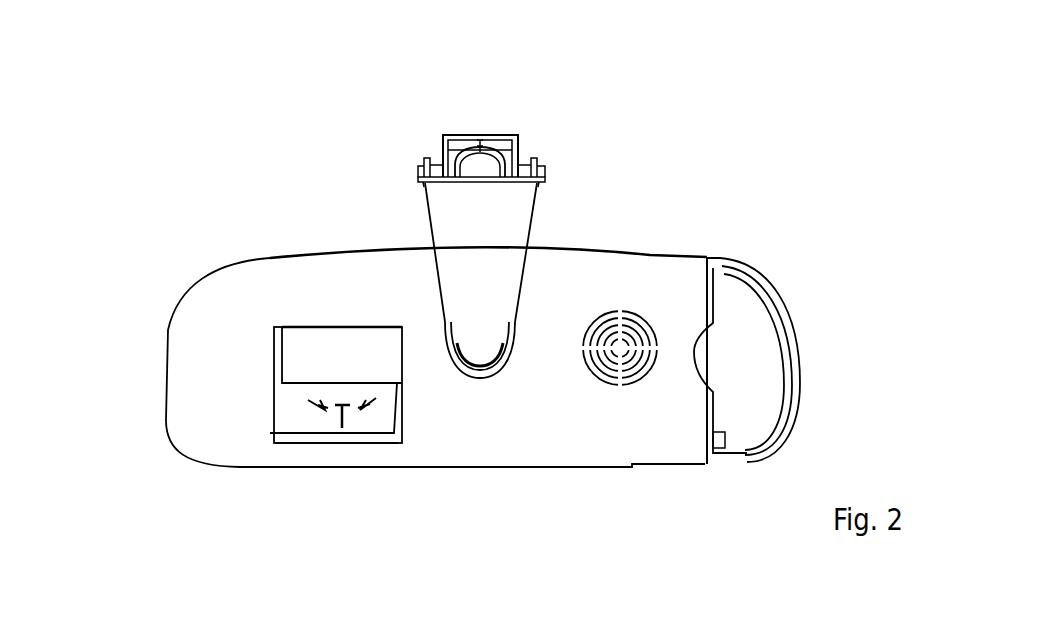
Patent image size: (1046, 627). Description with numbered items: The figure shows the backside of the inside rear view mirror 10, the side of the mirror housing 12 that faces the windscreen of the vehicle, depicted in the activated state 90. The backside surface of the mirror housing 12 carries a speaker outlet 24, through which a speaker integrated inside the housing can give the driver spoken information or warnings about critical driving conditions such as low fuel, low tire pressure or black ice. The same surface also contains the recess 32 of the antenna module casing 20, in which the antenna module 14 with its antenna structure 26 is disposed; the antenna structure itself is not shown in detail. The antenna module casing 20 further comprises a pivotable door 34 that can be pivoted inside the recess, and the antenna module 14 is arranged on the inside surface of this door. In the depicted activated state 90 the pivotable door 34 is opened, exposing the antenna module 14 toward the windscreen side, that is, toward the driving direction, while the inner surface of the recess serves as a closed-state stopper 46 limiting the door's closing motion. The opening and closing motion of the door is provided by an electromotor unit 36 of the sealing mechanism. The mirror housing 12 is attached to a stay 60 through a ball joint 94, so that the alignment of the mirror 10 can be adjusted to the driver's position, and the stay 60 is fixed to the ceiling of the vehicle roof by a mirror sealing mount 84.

The rear view mirror 10 is at (501, 295).
The activated state 90 is at (866, 68).
The mirror housing 12 is at (610, 250).
The antenna module 14 is at (229, 310).
The antenna structure 26 is at (300, 413).
The antenna module casing 20 is at (243, 374).
The recess 32 is at (313, 352).
The electromotor unit 36 is at (342, 395).
The closed-state stopper 46 is at (384, 342).
The pivotable door 34 is at (328, 447).
The speaker outlet 24 is at (641, 318).
The stay 60 is at (532, 225).
The mirror sealing mount 84 is at (521, 147).
The ball joint 94 is at (481, 368).